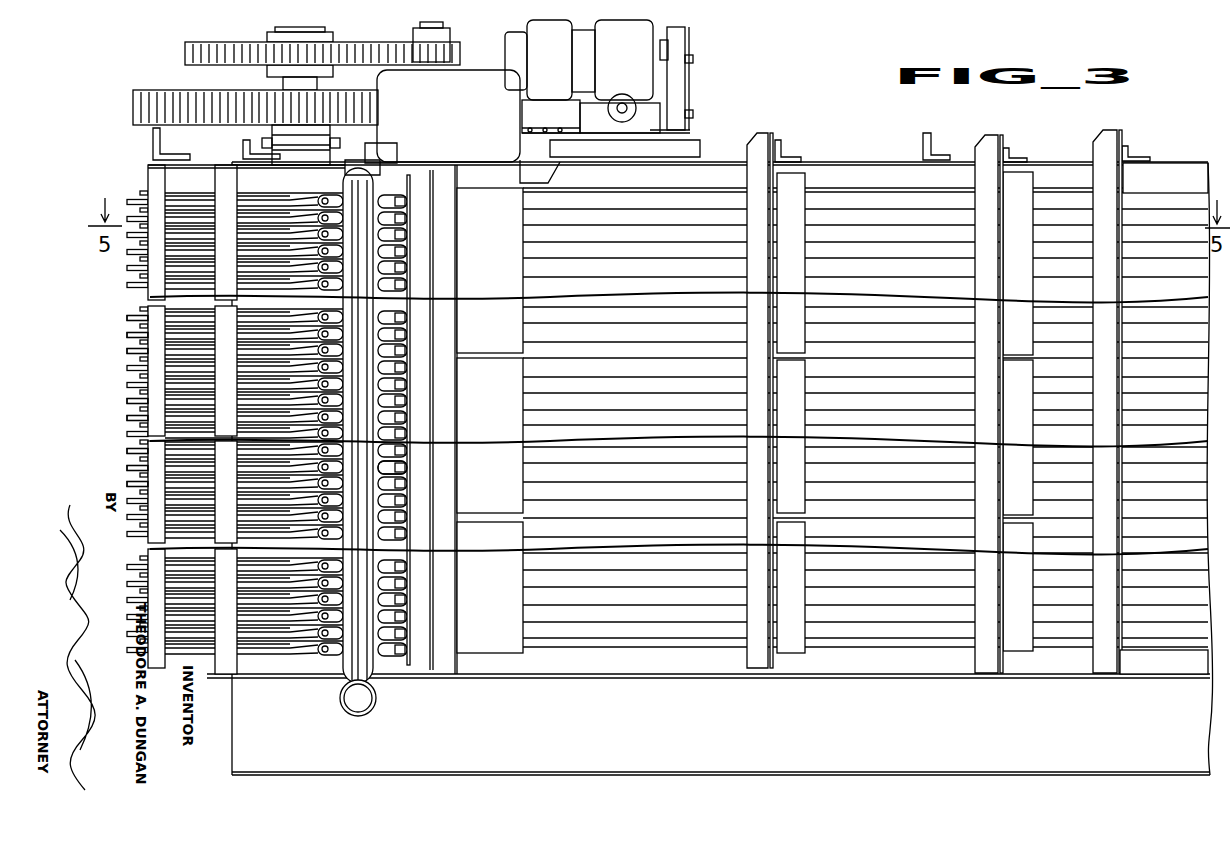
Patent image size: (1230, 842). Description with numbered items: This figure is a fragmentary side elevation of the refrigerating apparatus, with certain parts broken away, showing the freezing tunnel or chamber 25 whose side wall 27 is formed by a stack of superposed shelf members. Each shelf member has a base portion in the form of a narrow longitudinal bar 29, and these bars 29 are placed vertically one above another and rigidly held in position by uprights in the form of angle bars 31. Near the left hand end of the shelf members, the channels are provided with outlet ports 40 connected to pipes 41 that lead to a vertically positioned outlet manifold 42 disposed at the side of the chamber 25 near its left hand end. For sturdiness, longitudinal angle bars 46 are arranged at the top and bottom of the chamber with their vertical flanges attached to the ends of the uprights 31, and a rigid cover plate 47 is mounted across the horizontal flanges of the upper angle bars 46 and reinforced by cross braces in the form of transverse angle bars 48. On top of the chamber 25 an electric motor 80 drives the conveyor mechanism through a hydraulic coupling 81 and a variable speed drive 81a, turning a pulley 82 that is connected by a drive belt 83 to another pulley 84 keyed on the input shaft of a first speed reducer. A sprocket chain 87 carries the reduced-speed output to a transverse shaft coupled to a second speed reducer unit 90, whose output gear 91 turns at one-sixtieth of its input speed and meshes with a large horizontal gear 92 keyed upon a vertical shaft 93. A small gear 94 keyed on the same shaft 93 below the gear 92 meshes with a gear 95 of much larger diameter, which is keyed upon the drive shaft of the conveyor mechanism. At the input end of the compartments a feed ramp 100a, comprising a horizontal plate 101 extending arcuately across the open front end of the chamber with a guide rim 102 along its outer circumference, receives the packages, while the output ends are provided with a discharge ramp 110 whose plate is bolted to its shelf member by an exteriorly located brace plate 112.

The freezing tunnel or chamber 25 is at (864, 233).
The side wall 27 is at (880, 367).
The longitudinal strip or bar 29 is at (550, 241).
The angle bar upright 31 is at (1108, 143).
The outlet port 40 is at (433, 195).
The pipe 41 is at (408, 367).
The outlet manifold 42 is at (365, 493).
The longitudinal angle bar 46 is at (1172, 172).
The cover plate 47 is at (826, 160).
The transverse angle bar 48 is at (782, 142).
The electric motor 80 is at (563, 62).
The hydraulic coupling 81 is at (639, 62).
The variable speed drive 81a is at (650, 130).
The pulley 82 is at (690, 35).
The drive belt 83 is at (680, 72).
The pulley 84 is at (685, 105).
The sprocket chain 87 is at (557, 132).
The speed reducer unit 90 is at (490, 100).
The output gear 91 is at (448, 58).
The horizontal gear 92 is at (240, 40).
The vertical shaft 93 is at (300, 32).
The small gear 94 is at (296, 105).
The gear 95 is at (150, 103).
The feed ramp 100a is at (130, 486).
The horizontal plate 101 is at (130, 352).
The guide rim 102 is at (130, 418).
The discharge ramp 110 is at (205, 625).
The brace plate 112 is at (305, 215).